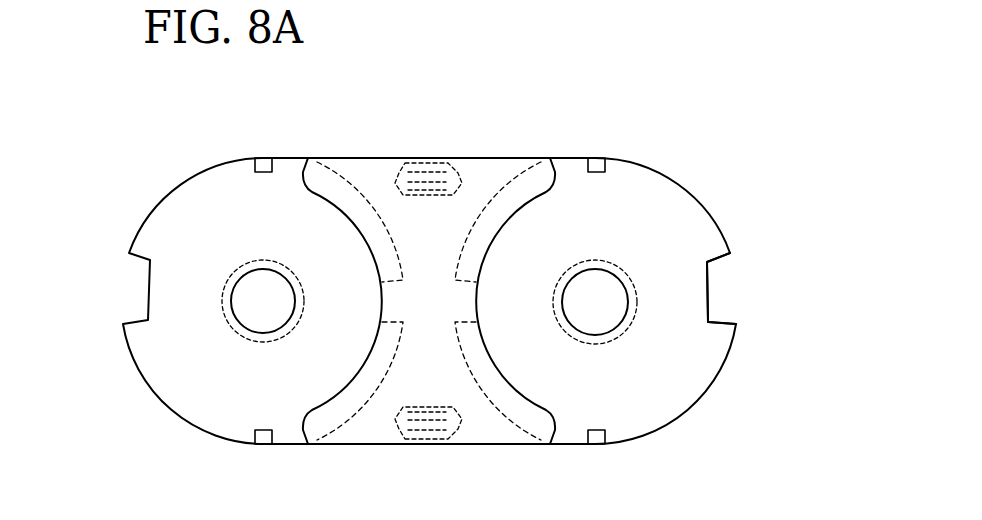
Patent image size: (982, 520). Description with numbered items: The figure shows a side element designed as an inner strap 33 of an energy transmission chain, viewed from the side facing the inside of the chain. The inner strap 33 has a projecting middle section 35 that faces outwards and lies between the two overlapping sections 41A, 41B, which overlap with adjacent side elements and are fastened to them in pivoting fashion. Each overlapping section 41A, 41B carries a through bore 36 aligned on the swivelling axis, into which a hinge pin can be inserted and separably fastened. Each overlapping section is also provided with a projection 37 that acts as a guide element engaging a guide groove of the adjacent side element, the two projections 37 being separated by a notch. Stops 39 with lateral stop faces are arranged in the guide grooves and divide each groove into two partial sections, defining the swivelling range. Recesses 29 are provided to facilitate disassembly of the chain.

The inner strap 33 is at (133, 447).
The first circular disk portion 41A is at (217, 205).
The second circular disk portion 41B is at (637, 197).
The through bore 36 is at (602, 308).
The projection 37 is at (713, 247).
The stop 39 is at (463, 303).
The projecting middle section 35 is at (348, 428).
The recess 29 is at (588, 440).